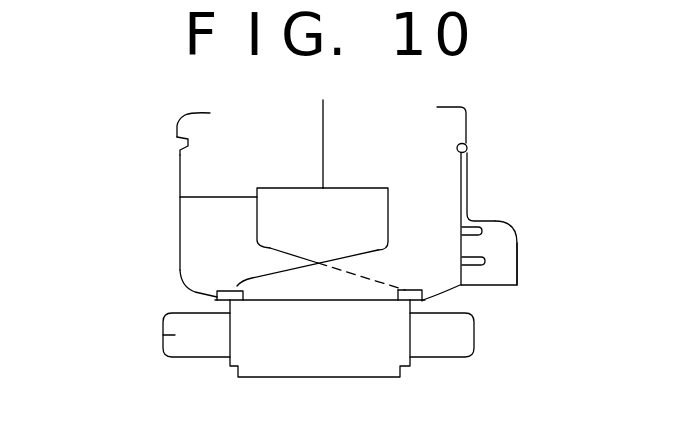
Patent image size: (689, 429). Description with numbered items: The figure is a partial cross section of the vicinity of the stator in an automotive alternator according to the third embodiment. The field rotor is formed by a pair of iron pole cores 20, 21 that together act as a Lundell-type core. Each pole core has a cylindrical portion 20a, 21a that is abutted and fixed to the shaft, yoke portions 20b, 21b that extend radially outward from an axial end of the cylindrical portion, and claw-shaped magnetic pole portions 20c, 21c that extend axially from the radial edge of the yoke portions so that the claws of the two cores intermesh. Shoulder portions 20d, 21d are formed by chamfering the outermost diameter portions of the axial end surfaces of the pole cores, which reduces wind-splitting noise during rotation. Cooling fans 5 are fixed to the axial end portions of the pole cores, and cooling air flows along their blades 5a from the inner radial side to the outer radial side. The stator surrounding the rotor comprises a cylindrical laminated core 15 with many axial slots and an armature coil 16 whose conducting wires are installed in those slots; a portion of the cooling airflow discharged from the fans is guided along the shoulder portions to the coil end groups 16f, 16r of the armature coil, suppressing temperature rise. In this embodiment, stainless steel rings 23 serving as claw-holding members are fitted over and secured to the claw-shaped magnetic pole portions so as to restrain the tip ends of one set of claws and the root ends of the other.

The cooling fan 5 is at (506, 214).
The blade 5a is at (503, 253).
The laminated core 15 is at (404, 366).
The armature coil 16 is at (155, 330).
The coil end group 16r is at (172, 344).
The coil end group 16f is at (463, 342).
The pole core 20 is at (455, 125).
The cylindrical portion 20a is at (425, 157).
The yoke portion 20b is at (440, 214).
The claw-shaped magnetic pole portion 20c is at (367, 262).
The shoulder portion 20d is at (452, 297).
The pole core 21 is at (174, 125).
The cylindrical portion 21a is at (205, 168).
The yoke portion 21b is at (200, 241).
The claw-shaped magnetic pole portion 21c is at (280, 262).
The shoulder portion 21d is at (195, 290).
The stainless steel ring 23 is at (226, 292).